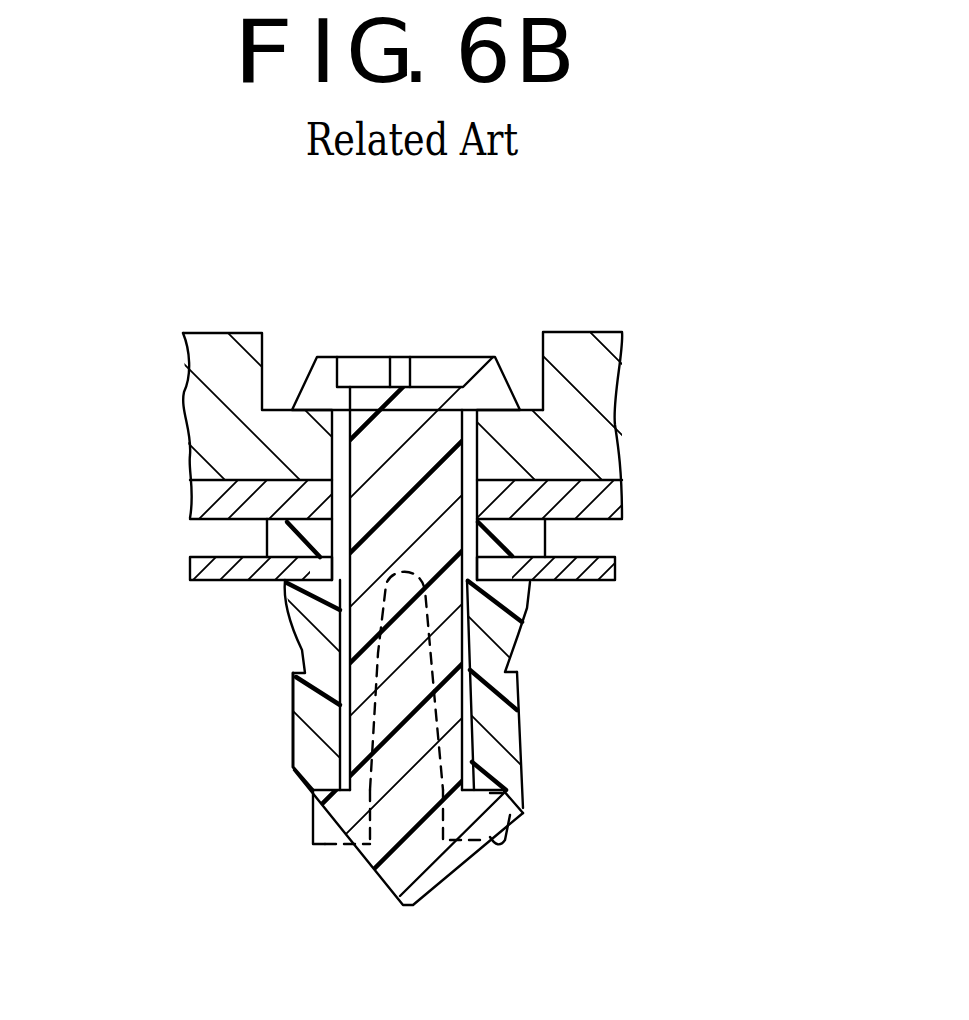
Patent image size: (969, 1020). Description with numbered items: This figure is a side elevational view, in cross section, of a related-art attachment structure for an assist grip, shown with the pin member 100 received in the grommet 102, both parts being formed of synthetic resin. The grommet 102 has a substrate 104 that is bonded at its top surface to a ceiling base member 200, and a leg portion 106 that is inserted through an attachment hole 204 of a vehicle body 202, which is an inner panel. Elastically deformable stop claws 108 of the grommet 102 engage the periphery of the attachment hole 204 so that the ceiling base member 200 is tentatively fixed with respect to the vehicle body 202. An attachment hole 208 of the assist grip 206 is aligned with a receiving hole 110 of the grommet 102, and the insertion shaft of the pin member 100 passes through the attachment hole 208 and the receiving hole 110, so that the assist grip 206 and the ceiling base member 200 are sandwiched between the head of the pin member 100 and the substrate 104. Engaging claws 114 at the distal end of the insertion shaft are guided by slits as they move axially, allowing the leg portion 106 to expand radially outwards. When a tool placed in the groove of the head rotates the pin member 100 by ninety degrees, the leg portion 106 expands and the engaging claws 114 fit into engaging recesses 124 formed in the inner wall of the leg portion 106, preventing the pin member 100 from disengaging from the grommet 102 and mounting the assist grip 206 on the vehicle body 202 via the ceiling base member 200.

The pin member 100 is at (496, 350).
The grommet 102 is at (532, 707).
The substrate 104 is at (537, 538).
The leg portion 106 is at (527, 760).
The stop claws 108 is at (295, 622).
The receiving hole 110 is at (440, 605).
The engaging claws 114 is at (333, 802).
The engaging recesses 124 is at (307, 840).
The ceiling base member 200 is at (610, 502).
The vehicle body 202 is at (615, 562).
The attachment hole 204 is at (303, 566).
The assist grip 206 is at (605, 379).
The attachment hole 208 is at (330, 474).